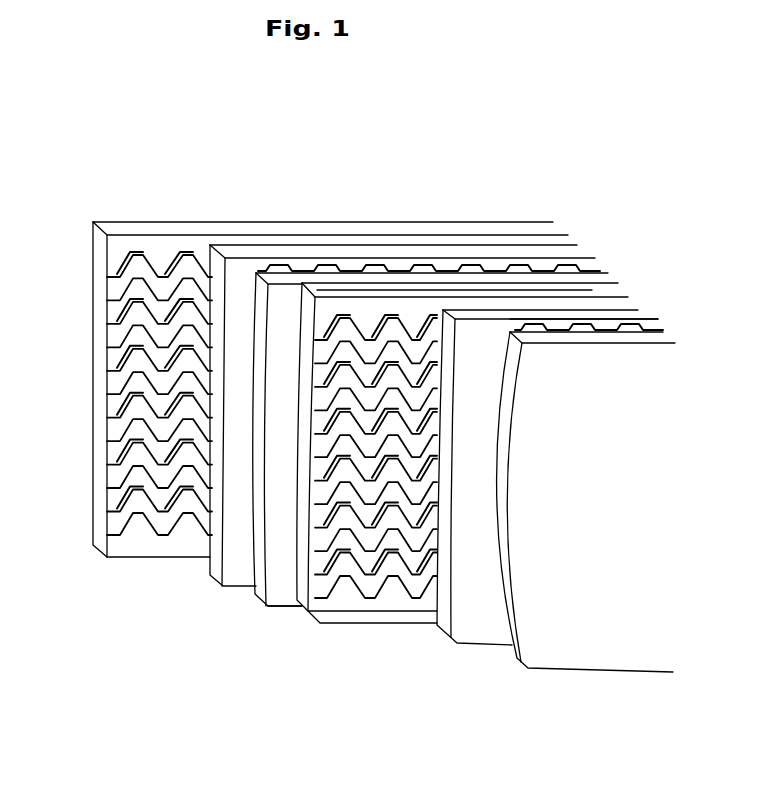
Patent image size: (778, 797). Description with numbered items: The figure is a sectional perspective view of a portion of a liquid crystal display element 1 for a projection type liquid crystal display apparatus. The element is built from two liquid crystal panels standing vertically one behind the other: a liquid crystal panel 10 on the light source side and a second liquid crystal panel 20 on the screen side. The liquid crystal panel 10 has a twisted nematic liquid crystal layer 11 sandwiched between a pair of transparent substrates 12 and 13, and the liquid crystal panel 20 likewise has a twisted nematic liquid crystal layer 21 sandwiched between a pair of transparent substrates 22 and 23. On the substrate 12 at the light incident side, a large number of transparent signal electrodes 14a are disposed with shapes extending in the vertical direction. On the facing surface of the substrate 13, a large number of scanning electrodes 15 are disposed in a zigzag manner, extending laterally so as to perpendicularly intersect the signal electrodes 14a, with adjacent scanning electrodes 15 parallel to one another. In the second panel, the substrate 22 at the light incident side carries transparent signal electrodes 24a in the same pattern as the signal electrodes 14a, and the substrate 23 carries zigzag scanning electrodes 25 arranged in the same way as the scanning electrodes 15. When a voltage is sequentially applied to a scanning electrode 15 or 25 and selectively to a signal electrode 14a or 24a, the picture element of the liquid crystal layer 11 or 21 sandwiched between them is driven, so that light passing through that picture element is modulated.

The liquid crystal display element 1 is at (543, 177).
The liquid crystal panel 10 is at (713, 260).
The twisted nematic liquid crystal layer 11 is at (640, 315).
The transparent substrate 12 is at (667, 332).
The transparent substrate 13 is at (610, 290).
The transparent signal electrodes 14a is at (622, 344).
The scanning electrodes 15 is at (300, 605).
The liquid crystal panel 20 is at (385, 138).
The twisted nematic liquid crystal layer 21 is at (317, 256).
The transparent substrate 22 is at (351, 283).
The transparent substrate 23 is at (264, 232).
The transparent signal electrodes 24a is at (484, 266).
The scanning electrodes 25 is at (111, 430).